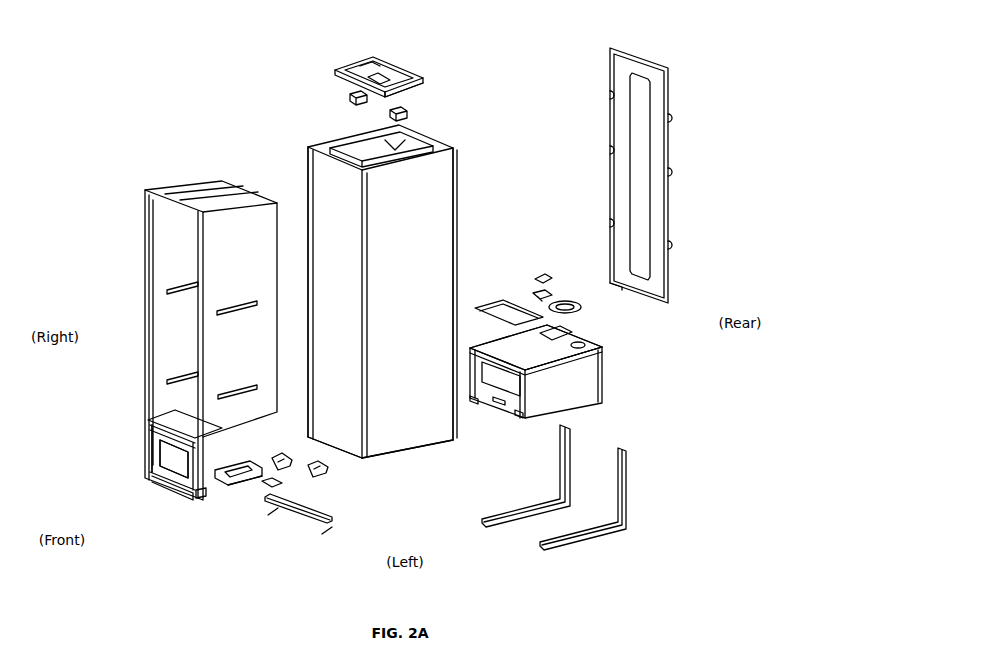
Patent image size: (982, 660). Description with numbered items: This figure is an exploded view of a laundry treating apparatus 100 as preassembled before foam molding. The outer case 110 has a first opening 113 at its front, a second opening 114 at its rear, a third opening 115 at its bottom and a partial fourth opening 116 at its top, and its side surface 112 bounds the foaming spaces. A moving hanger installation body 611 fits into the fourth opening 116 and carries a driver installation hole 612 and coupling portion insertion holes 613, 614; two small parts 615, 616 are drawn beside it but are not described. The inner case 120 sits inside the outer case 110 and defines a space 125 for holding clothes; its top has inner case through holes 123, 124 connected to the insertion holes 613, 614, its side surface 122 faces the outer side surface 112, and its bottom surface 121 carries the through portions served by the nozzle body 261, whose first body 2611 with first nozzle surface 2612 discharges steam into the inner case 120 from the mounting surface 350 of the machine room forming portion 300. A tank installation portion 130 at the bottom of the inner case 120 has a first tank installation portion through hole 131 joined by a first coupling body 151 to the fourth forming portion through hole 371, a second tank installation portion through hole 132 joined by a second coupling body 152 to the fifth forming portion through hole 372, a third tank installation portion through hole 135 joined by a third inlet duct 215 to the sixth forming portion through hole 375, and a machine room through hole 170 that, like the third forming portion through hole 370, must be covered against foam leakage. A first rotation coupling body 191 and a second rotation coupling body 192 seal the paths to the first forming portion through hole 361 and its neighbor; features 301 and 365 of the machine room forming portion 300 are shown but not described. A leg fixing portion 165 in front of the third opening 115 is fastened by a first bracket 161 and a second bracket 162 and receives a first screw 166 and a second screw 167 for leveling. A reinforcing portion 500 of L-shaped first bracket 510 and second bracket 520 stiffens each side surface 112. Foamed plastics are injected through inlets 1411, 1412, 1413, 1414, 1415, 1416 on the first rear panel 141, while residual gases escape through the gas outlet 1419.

The laundry treating apparatus 100 is at (154, 16).
The outer case 110 is at (422, 208).
The side surface of outer case 112 is at (405, 445).
The first opening 113 is at (325, 182).
The second opening 114 is at (456, 175).
The third opening 115 is at (363, 456).
The fourth opening 116 is at (405, 147).
The inner case 120 is at (150, 200).
The bottom surface of inner case 121 is at (160, 420).
The side surface of inner case 122 is at (245, 272).
The inner case through hole 123 is at (200, 194).
The inner case through hole 124 is at (240, 203).
The space for holding clothes 125 is at (160, 240).
The tank installation portion 130 is at (150, 432).
The first tank installation portion through hole 131 is at (152, 472).
The second tank installation portion through hole 132 is at (200, 497).
The third tank installation portion through hole 135 is at (172, 490).
The first rear panel 141 is at (688, 65).
The inlet 1411 is at (670, 118).
The inlet 1412 is at (608, 95).
The inlet 1413 is at (670, 172).
The inlet 1414 is at (608, 150).
The inlet 1415 is at (670, 245).
The inlet 1416 is at (608, 223).
The gas outlet 1419 is at (640, 75).
The first coupling body 151 is at (237, 468).
The second coupling body 152 is at (282, 483).
The first bracket 161 is at (280, 456).
The second bracket 162 is at (320, 462).
The leg fixing portion 165 is at (332, 512).
The first screw 166 is at (273, 512).
The second screw 167 is at (328, 530).
The machine room through hole 170 is at (175, 447).
The first rotation coupling body 191 is at (570, 301).
The second rotation coupling body 192 is at (505, 302).
The third inlet duct 215 is at (245, 482).
The nozzle body 261 is at (562, 225).
The first body 2611 is at (537, 276).
The first nozzle surface 2612 is at (545, 290).
The machine room forming portion 300 is at (582, 395).
The opening 301 is at (585, 345).
The mounting surface 350 is at (566, 333).
The first forming portion through hole 361 is at (604, 349).
The top plate 365 is at (483, 346).
The third forming portion through hole 370 is at (505, 385).
The fourth forming portion through hole 371 is at (474, 404).
The fifth forming portion through hole 372 is at (519, 418).
The sixth forming portion through hole 375 is at (499, 405).
The reinforcing portion 500 is at (690, 432).
The first bracket 510 is at (572, 440).
The second bracket 520 is at (628, 477).
The moving hanger installation body 611 is at (395, 63).
The driver installation hole 612 is at (408, 73).
The coupling portion insertion hole 613 is at (372, 65).
The coupling portion insertion hole 614 is at (416, 86).
The block 615 is at (349, 98).
The block 616 is at (408, 115).